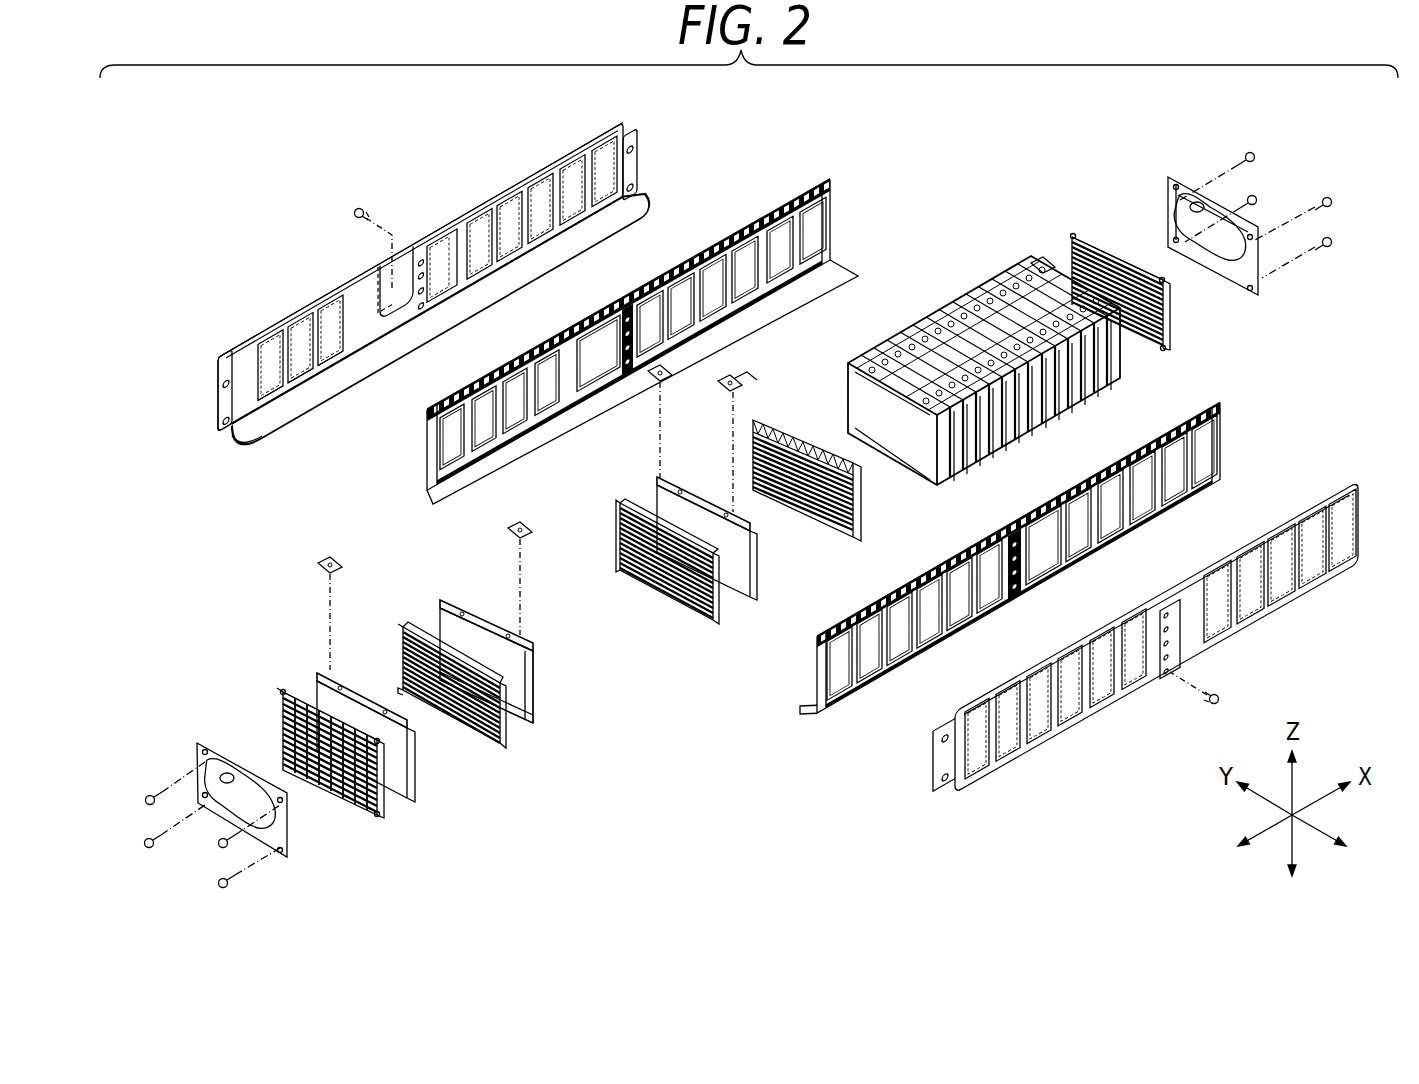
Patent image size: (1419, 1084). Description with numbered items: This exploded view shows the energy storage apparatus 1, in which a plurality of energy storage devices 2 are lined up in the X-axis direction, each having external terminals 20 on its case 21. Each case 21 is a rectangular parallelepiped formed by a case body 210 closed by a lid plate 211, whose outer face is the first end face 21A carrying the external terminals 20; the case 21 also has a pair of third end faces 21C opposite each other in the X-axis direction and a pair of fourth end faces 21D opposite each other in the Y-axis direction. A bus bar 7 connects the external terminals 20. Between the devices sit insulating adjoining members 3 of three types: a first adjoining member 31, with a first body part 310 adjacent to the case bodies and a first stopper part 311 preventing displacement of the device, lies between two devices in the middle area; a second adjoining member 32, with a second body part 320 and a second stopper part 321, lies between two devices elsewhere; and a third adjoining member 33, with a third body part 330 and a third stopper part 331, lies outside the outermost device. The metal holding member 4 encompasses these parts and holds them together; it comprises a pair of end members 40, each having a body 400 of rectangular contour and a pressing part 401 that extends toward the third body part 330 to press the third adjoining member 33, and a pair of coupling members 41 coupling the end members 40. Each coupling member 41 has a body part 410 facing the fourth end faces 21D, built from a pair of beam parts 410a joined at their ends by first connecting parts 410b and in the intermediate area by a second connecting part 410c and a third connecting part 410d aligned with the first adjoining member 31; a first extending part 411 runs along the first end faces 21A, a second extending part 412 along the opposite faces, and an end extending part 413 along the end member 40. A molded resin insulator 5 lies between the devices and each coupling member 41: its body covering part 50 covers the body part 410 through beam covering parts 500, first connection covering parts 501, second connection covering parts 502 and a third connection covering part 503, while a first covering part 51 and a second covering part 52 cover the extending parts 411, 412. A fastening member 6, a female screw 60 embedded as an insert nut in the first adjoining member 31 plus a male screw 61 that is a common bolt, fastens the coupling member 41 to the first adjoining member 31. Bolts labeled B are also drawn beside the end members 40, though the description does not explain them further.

The energy storage apparatus 1 is at (984, 324).
The energy storage device 2 is at (639, 652).
The external terminals 20 is at (330, 672).
The case 21 is at (555, 657).
The first end face 21A is at (490, 620).
The third end faces 21C is at (553, 695).
The fourth end faces 21D is at (565, 725).
The case body 210 is at (501, 655).
The lid plate 211 is at (544, 641).
The adjoining member 3 is at (742, 522).
The first adjoining member 31 is at (791, 433).
The first body part 310 is at (862, 478).
The first stopper part 311 is at (775, 422).
The second adjoining member 32 is at (571, 636).
The second body part 320 is at (620, 508).
The second stopper part 321 is at (403, 627).
The third adjoining member 33 is at (742, 522).
The third body part 330 is at (1168, 318).
The third stopper part 331 is at (1075, 234).
The holding member 4 is at (1340, 507).
The end member 40 is at (753, 501).
The body 400 is at (732, 513).
The pressing part 401 is at (1175, 212).
The coupling member 41 is at (774, 469).
The body part 410 is at (717, 313).
The beam parts 410a is at (442, 265).
The first connecting parts 410b is at (622, 126).
The second connecting part 410c is at (300, 375).
The third connecting part 410d is at (401, 286).
The first extending part 411 is at (437, 268).
The second extending part 412 is at (440, 318).
The end extending part 413 is at (427, 275).
The insulator 5 is at (817, 434).
The body covering part 50 is at (817, 434).
The beam covering part 500 is at (629, 373).
The first connection covering part 501 is at (629, 335).
The second connection covering parts 502 is at (628, 299).
The third connection covering part 503 is at (627, 341).
The first covering part 51 is at (628, 335).
The second covering part 52 is at (642, 382).
The fastening member 6 is at (785, 438).
The female screw 60 is at (765, 568).
The male screw 61 is at (355, 212).
The bus bar 7 is at (318, 565).
The bolt B is at (1250, 152).